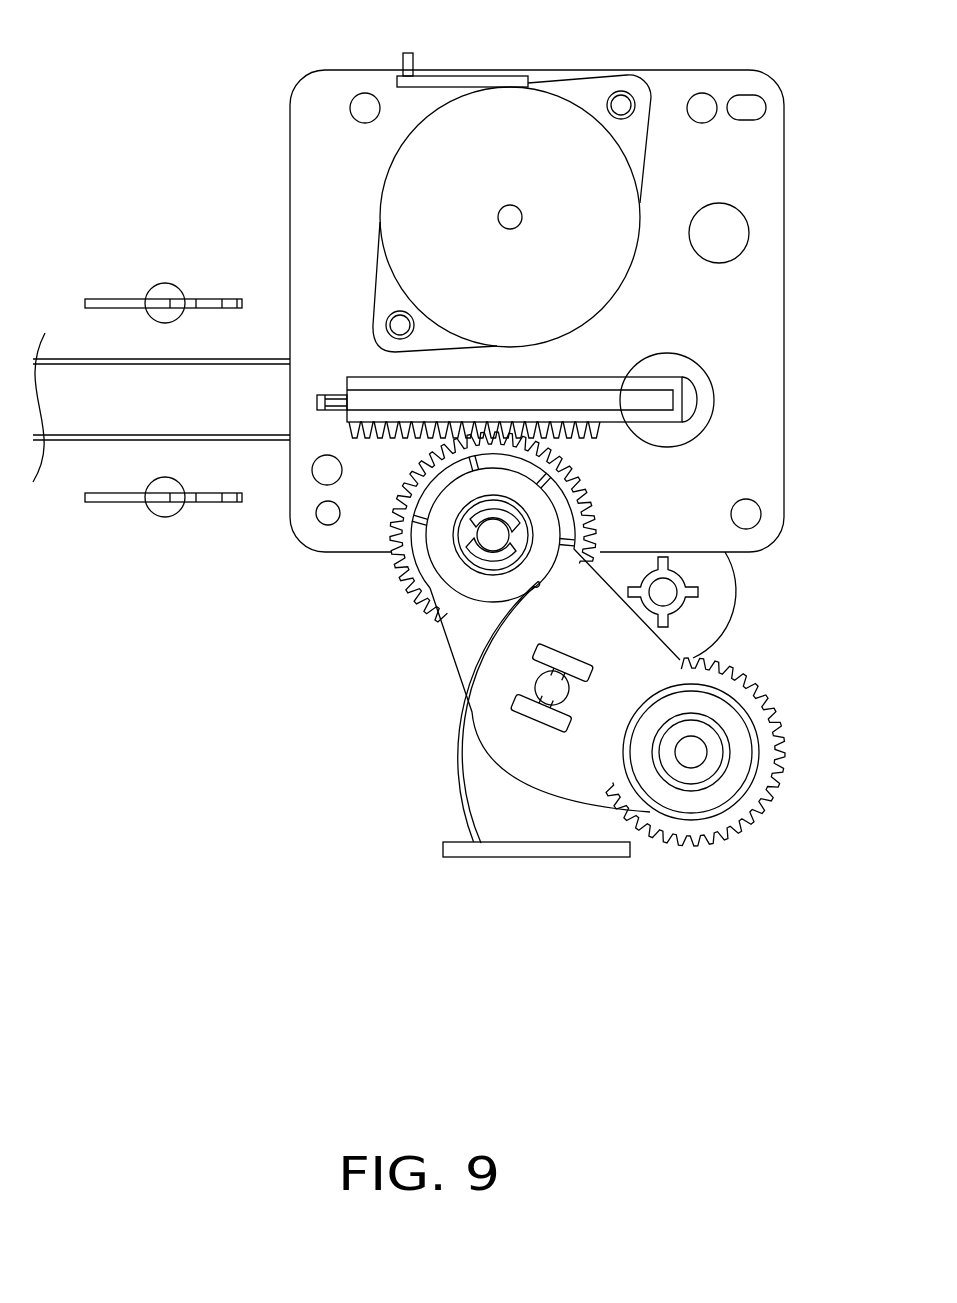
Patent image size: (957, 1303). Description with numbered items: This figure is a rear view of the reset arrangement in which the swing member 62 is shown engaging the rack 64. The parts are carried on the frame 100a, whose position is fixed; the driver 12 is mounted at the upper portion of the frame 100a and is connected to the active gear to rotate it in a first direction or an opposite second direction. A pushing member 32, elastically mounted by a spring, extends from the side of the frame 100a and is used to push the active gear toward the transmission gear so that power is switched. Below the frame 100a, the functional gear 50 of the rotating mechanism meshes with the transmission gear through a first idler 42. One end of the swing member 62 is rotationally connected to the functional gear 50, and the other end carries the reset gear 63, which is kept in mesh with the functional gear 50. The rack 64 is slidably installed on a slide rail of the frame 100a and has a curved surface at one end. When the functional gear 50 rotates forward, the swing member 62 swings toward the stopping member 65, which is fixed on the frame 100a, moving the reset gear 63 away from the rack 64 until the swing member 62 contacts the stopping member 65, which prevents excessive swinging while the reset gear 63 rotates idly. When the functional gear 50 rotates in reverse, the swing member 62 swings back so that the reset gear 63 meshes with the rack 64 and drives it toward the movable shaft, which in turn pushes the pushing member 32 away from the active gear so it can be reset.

The frame 100a is at (337, 145).
The driver 12 is at (517, 100).
The pushing member 32 is at (117, 303).
The first idler 42 is at (710, 610).
The functional gear 50 is at (778, 740).
The swing member 62 is at (468, 650).
The reset gear 63 is at (415, 585).
The rack 64 is at (620, 398).
The stopping member 65 is at (485, 850).